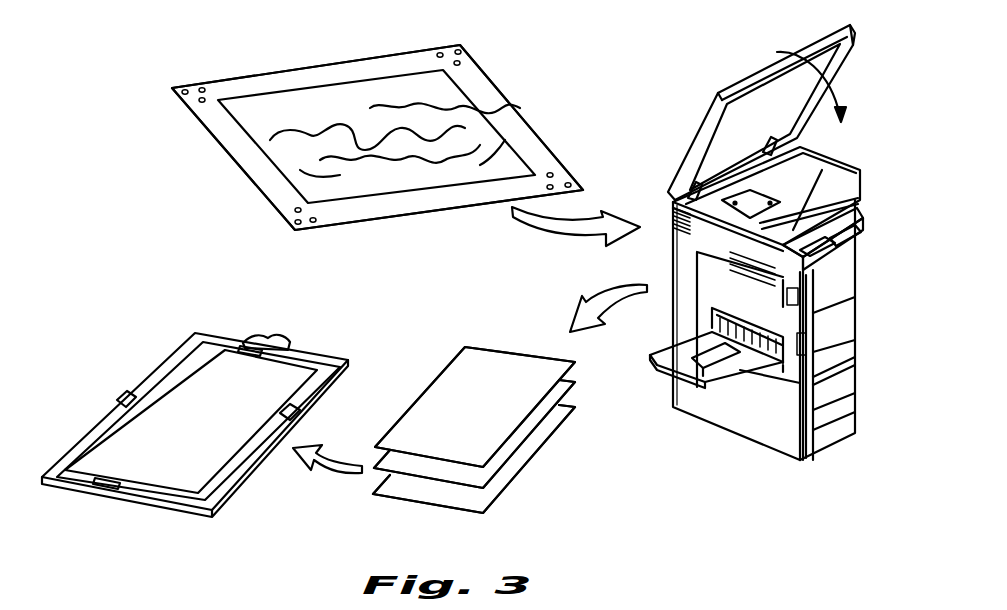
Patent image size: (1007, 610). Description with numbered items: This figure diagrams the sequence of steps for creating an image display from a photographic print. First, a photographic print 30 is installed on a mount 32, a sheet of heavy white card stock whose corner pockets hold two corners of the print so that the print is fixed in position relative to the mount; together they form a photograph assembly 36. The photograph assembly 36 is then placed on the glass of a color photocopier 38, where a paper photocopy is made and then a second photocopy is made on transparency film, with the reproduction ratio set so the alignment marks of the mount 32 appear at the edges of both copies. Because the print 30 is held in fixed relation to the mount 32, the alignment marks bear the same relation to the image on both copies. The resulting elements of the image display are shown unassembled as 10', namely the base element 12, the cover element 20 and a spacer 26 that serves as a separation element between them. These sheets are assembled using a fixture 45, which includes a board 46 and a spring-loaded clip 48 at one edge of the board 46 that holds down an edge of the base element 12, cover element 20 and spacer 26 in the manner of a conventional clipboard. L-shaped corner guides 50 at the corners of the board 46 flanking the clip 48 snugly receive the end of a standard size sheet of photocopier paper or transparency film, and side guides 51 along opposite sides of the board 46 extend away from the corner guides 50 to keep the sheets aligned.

The unassembled image display elements 10' is at (452, 449).
The base element 12 is at (538, 447).
The cover element 20 is at (437, 400).
The spacer 26 is at (373, 463).
The photographic print 30 is at (295, 107).
The mount 32 is at (250, 160).
The photograph assembly 36 is at (197, 163).
The color photocopier 38 is at (730, 451).
The fixture 45 is at (124, 364).
The board 46 is at (227, 500).
The spring-loaded clip 48 is at (243, 343).
The L-shaped corner guides 50 is at (185, 342).
The side guides 51 is at (122, 405).